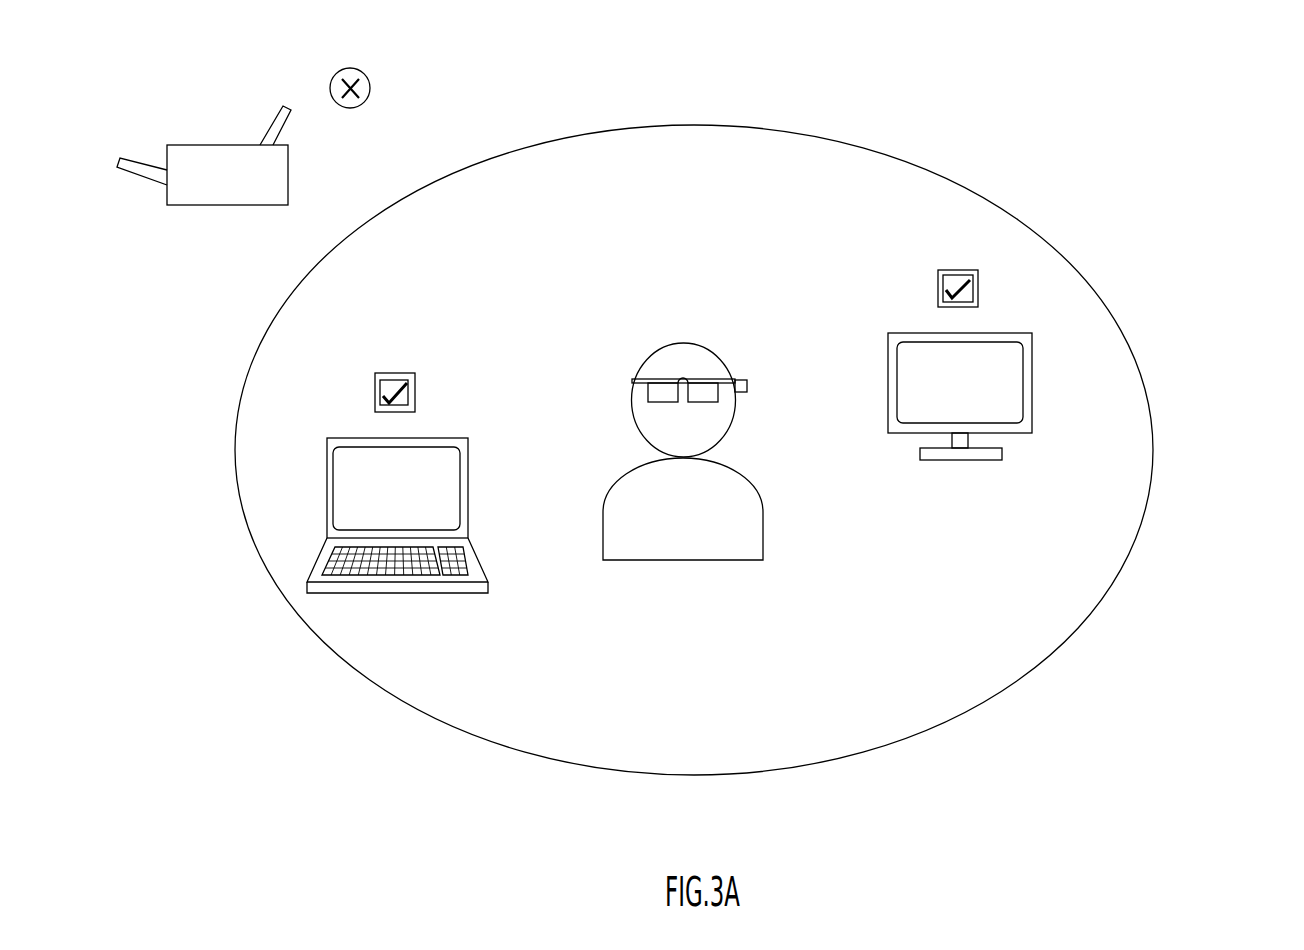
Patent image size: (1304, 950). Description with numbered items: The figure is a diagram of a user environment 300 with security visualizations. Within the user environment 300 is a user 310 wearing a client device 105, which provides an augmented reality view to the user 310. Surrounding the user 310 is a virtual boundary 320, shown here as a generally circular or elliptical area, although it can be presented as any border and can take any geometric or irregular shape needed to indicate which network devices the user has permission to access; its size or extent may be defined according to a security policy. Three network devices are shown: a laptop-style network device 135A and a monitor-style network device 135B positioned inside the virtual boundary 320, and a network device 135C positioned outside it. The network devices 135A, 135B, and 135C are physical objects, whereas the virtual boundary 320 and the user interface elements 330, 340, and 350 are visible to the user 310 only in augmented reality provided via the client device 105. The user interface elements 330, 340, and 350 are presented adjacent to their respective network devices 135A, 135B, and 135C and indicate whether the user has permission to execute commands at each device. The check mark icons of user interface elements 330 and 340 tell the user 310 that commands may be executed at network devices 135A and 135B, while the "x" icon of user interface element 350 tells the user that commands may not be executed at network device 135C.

The user environment 300 is at (1213, 208).
The virtual boundary 320 is at (1007, 210).
The user interface element 350 is at (330, 82).
The network device 135C is at (167, 160).
The user interface element 330 is at (375, 395).
The network device 135A is at (327, 490).
The user 310 is at (603, 512).
The client device 105 is at (747, 385).
The user interface element 340 is at (938, 290).
The network device 135B is at (888, 383).